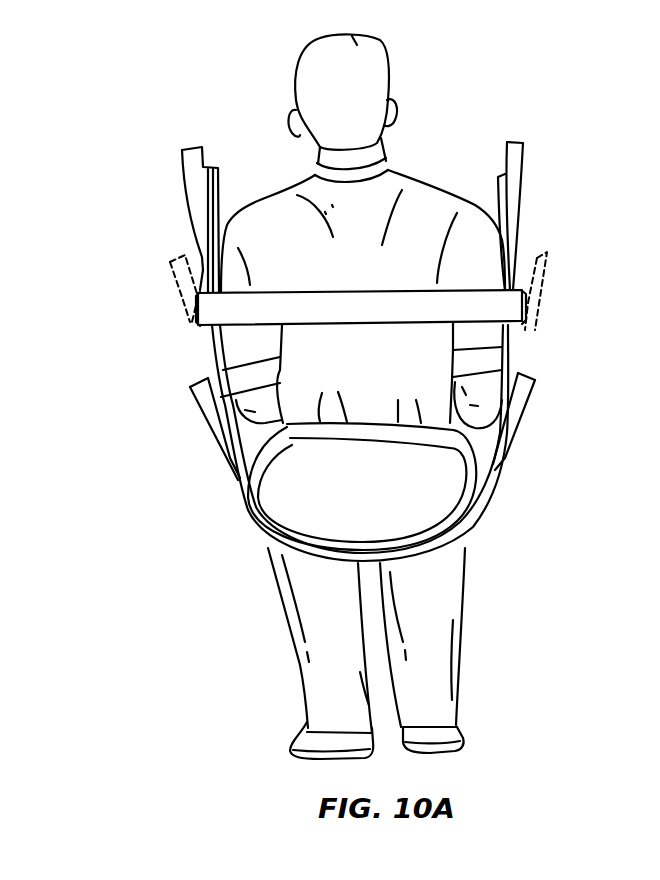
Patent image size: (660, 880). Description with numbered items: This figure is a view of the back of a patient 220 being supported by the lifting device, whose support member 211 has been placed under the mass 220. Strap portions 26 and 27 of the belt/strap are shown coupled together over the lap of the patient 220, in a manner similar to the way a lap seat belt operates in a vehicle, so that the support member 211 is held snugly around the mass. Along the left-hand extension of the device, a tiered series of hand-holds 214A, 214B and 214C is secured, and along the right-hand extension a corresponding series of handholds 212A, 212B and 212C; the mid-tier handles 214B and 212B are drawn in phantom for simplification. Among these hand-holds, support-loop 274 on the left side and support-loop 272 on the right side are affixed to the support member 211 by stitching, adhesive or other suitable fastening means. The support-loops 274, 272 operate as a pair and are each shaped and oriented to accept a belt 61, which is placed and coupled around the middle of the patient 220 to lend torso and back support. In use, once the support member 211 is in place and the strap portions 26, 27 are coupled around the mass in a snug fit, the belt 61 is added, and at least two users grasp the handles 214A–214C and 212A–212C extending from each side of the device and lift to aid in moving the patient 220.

The patient (mass) 220 is at (282, 211).
The belt 61 is at (357, 310).
The hand-hold 214A is at (188, 162).
The handhold 212A is at (513, 160).
The mid-tier handle 214B is at (175, 253).
The mid-tier handle 212B is at (537, 258).
The support-loop 274 is at (195, 312).
The support-loop 272 is at (527, 295).
The hand-hold 214C is at (200, 405).
The handhold 212C is at (533, 387).
The strap portion 26 is at (233, 485).
The strap portion 27 is at (503, 460).
The support member 211 is at (480, 510).